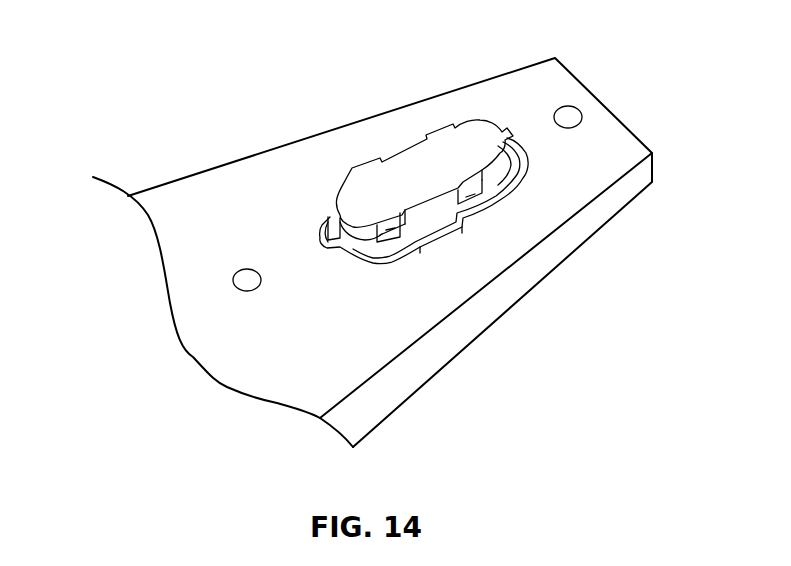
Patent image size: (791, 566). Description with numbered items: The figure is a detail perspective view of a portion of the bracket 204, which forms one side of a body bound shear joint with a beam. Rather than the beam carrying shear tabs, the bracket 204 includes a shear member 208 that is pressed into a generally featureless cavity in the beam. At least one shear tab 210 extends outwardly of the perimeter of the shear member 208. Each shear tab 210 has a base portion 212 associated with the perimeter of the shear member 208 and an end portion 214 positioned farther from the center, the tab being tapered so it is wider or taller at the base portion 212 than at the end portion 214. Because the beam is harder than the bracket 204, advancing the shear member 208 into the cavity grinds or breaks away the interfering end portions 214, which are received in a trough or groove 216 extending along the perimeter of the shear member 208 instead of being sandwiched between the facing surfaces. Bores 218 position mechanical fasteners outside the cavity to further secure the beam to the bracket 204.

The bracket 204 is at (228, 467).
The shear member 208 is at (393, 143).
The shear tab 210 is at (368, 159).
The base portion 212 is at (335, 232).
The end portion 214 is at (322, 228).
The trough or groove 216 is at (520, 187).
The bores 218 is at (233, 279).